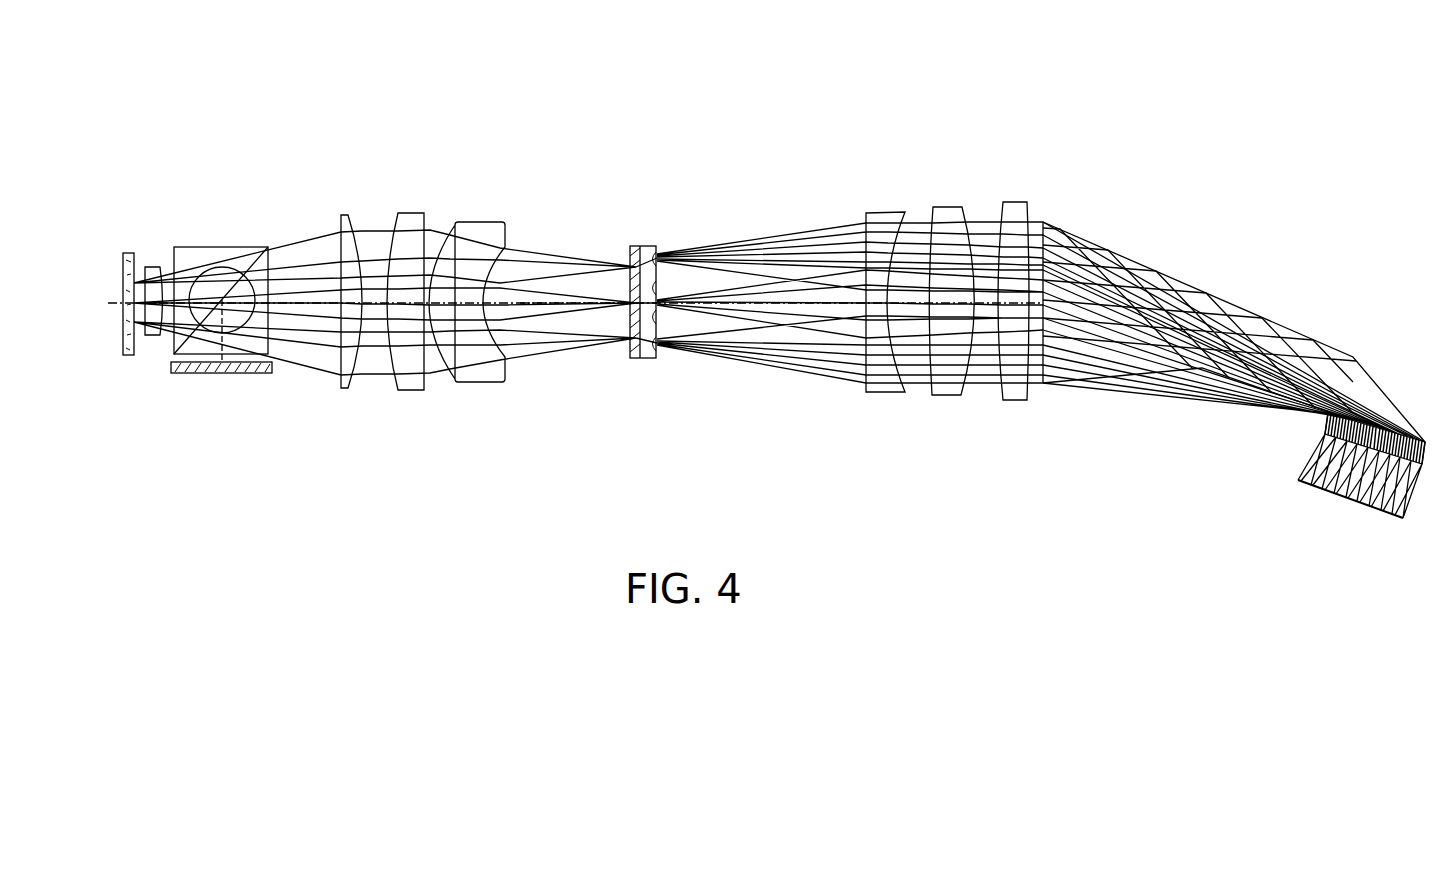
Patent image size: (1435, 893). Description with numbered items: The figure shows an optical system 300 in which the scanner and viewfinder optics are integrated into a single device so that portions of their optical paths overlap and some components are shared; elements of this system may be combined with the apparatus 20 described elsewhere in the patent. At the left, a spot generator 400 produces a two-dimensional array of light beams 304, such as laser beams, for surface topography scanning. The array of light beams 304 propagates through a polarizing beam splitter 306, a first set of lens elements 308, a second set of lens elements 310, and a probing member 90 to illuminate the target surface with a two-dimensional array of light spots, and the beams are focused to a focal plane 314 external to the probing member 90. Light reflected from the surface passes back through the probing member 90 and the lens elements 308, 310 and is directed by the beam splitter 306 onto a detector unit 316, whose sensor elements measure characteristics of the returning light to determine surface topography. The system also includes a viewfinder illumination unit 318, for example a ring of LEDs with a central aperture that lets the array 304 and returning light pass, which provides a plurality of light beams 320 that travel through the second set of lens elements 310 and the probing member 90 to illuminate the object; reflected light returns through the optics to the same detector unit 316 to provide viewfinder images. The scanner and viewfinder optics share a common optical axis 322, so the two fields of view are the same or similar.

The apparatus 20 is at (1042, 49).
The optical system 300 is at (1044, 102).
The spot generator 400 is at (130, 251).
The polarizing beam splitter 306 is at (218, 247).
The detector unit 316 is at (220, 375).
The array of light beams 304 is at (298, 225).
The first set of lens elements 308 is at (411, 203).
The common optical axis 322 is at (560, 303).
The viewfinder illumination unit 318 is at (641, 246).
The light beams 320 is at (768, 226).
The second set of lens elements 310 is at (916, 203).
The probing member 90 is at (1070, 228).
The focal plane 314 is at (1350, 497).